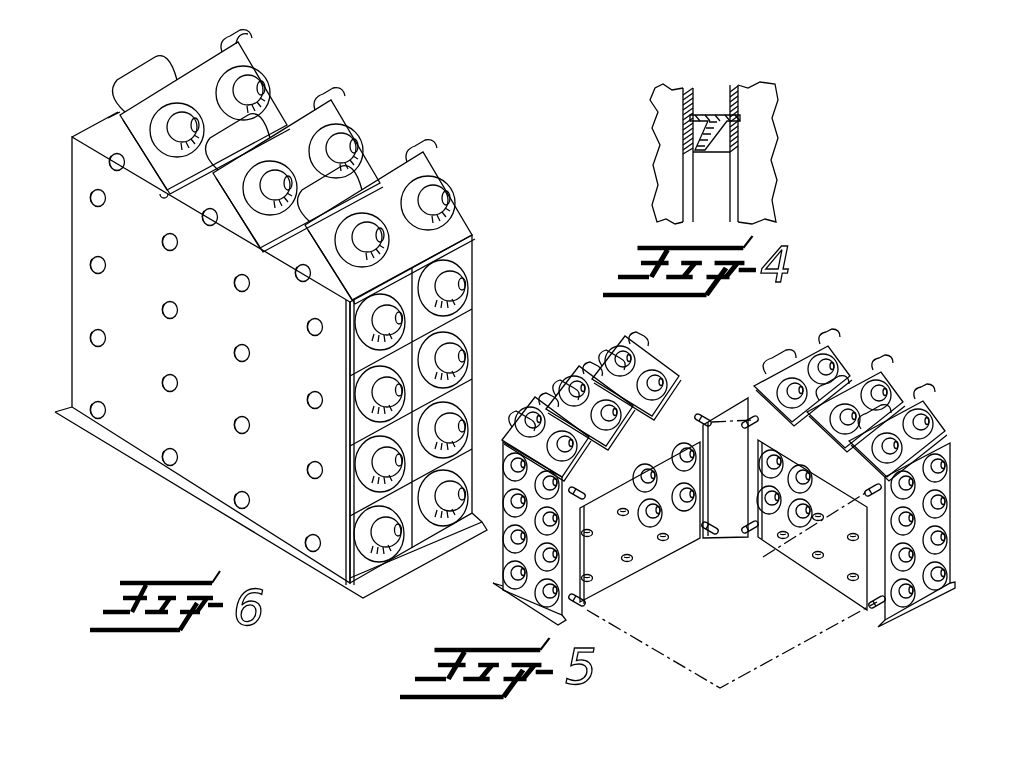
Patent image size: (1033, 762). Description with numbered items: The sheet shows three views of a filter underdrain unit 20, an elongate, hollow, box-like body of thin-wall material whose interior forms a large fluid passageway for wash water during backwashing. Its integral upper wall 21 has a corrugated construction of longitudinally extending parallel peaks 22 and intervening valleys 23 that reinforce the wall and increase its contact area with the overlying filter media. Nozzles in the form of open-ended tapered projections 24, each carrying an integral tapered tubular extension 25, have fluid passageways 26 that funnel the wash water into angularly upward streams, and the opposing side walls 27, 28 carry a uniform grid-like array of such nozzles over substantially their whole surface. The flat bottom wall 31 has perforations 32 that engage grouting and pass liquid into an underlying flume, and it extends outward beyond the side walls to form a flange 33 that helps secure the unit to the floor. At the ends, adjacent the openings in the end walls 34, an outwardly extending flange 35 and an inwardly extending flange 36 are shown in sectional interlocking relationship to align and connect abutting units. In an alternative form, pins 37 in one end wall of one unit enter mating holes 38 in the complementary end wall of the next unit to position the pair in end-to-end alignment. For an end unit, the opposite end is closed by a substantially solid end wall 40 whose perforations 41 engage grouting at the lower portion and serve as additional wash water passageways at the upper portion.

In FIG. 6, the underdrain unit 20 is at (449, 132).
In FIG. 5, the underdrain unit 20 is at (585, 350).
In FIG. 6, the upper wall 21 is at (433, 164).
In FIG. 5, the upper wall 21 is at (650, 352).
In FIG. 6, the peaks 22 is at (238, 44).
In FIG. 5, the peaks 22 is at (633, 350).
In FIG. 6, the valleys 23 is at (166, 190).
In FIG. 5, the valleys 23 is at (853, 468).
In FIG. 6, the tapered projections 24 is at (112, 106).
In FIG. 5, the tapered projections 24 is at (518, 404).
In FIG. 6, the extension 25 is at (190, 74).
In FIG. 5, the extension 25 is at (573, 385).
In FIG. 6, the fluid passageways 26 is at (258, 88).
In FIG. 5, the fluid passageways 26 is at (555, 393).
In FIG. 5, the side wall 27 is at (562, 547).
In FIG. 5, the side wall 28 is at (705, 500).
In FIG. 5, the bottom wall 31 is at (660, 527).
In FIG. 5, the perforations 32 is at (630, 560).
In FIG. 6, the flange 33 is at (383, 588).
In FIG. 5, the flange 33 is at (905, 616).
In FIG. 4, the end walls 34 is at (683, 117).
In FIG. 5, the end walls 34 is at (823, 455).
In FIG. 4, the outwardly extending flange 35 is at (717, 152).
In FIG. 4, the inwardly extending flange 36 is at (717, 115).
In FIG. 5, the pins 37 is at (700, 422).
In FIG. 5, the holes 38 is at (747, 415).
In FIG. 6, the solid end wall 40 is at (215, 302).
In FIG. 6, the perforations 41 is at (163, 383).